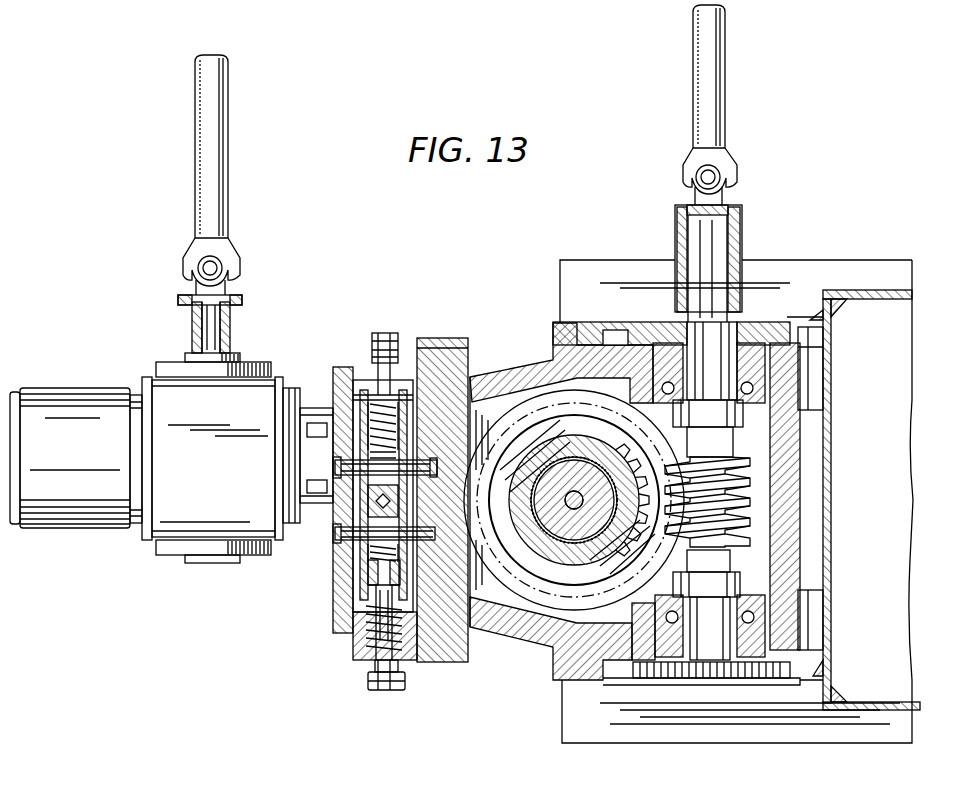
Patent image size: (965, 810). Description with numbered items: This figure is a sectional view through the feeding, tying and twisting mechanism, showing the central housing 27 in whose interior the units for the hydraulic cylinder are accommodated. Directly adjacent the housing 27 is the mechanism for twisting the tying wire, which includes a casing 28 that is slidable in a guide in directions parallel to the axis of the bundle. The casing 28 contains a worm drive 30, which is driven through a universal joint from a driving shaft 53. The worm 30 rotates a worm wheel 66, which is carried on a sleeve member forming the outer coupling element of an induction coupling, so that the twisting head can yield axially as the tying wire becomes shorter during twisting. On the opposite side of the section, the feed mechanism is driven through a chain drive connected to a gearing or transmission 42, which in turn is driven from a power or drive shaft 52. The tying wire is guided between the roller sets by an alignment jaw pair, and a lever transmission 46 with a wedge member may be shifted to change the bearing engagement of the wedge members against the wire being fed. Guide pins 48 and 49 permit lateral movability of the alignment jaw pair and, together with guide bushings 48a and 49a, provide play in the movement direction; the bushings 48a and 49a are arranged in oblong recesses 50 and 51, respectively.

The central housing 27 is at (893, 313).
The casing 28 is at (790, 447).
The worm drive 30 is at (786, 518).
The gearing 42 is at (163, 518).
The lever transmission 46 is at (388, 688).
The guide pin 48 is at (335, 467).
The guide bushing 48a is at (338, 410).
The guide pin 49 is at (337, 531).
The guide bushing 49a is at (365, 549).
The oblong recess 50 is at (471, 376).
The oblong recess 51 is at (370, 562).
The drive shaft 52 is at (226, 148).
The driving shaft 53 is at (700, 93).
The worm wheel 66 is at (535, 597).